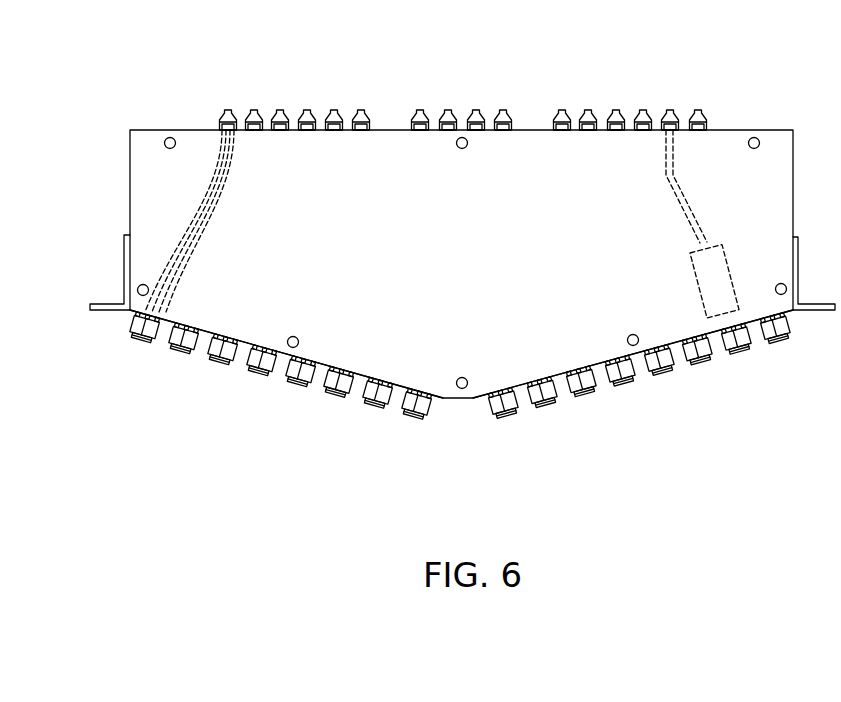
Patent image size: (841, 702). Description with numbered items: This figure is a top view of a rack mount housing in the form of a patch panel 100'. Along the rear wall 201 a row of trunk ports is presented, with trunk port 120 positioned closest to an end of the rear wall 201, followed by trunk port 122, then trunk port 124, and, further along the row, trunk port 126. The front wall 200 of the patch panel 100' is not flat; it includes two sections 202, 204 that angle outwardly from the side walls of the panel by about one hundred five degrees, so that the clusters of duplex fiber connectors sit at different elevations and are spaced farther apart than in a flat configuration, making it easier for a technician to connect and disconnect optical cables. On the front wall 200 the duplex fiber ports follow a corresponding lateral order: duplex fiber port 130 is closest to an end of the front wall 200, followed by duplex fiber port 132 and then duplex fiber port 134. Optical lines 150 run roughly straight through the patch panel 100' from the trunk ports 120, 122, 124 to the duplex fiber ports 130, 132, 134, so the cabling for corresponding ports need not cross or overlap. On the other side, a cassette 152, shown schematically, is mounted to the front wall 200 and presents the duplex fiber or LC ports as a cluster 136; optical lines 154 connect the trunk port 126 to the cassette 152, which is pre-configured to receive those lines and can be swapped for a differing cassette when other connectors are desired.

The patch panel 100' is at (407, 264).
The trunk port 120 is at (232, 109).
The trunk port 122 is at (252, 108).
The trunk port 124 is at (283, 109).
The trunk port 126 is at (673, 109).
The duplex fiber port 130 is at (147, 348).
The duplex fiber port 132 is at (187, 360).
The duplex fiber port 134 is at (223, 368).
The cluster of duplex fiber ports 136 is at (731, 368).
The optical lines 150 is at (195, 218).
The cassette 152 is at (732, 267).
The optical lines 154 is at (692, 199).
The front wall 200 is at (794, 315).
The rear wall 201 is at (155, 128).
The front wall section 202 is at (323, 383).
The front wall section 204 is at (517, 385).